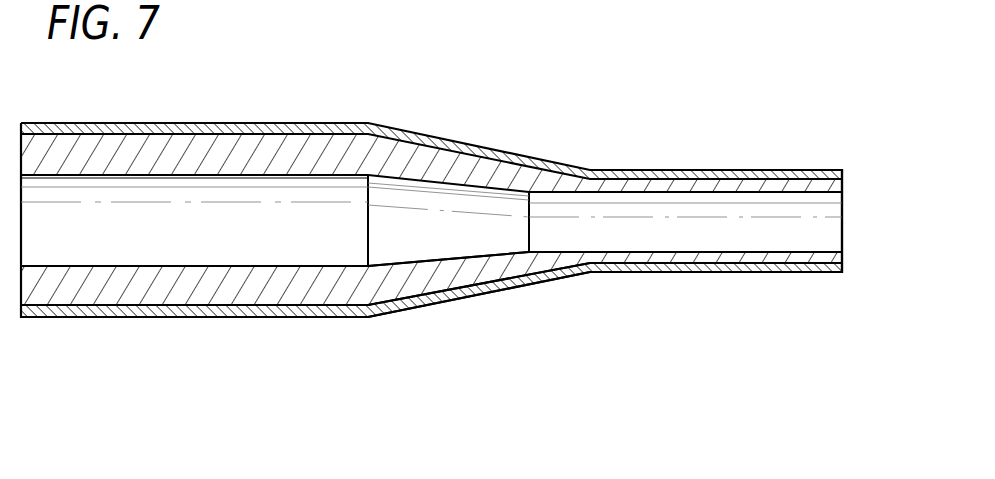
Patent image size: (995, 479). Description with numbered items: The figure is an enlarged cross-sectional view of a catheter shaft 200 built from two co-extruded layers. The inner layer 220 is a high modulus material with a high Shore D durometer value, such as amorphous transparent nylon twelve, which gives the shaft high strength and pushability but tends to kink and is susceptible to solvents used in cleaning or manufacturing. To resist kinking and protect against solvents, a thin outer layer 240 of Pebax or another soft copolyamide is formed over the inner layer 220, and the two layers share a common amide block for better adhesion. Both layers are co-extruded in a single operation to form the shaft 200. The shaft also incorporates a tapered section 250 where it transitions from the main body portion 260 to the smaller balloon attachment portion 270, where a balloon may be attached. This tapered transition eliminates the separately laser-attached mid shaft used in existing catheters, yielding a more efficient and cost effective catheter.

The shaft 200 is at (598, 333).
The inner layer 220 is at (342, 150).
The outer layer 240 is at (227, 123).
The tapered section 250 is at (588, 287).
The main body portion 260 is at (100, 318).
The balloon attachment portion 270 is at (767, 170).